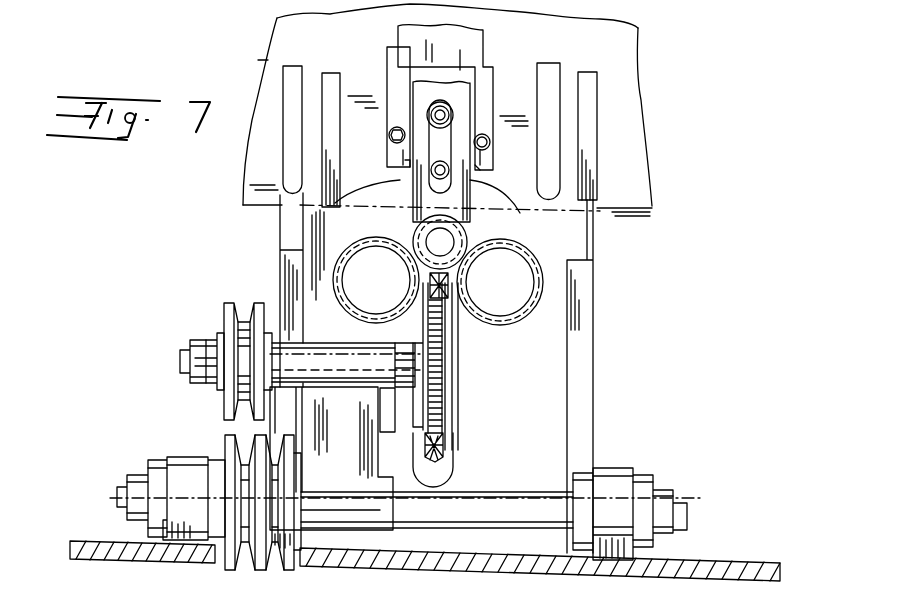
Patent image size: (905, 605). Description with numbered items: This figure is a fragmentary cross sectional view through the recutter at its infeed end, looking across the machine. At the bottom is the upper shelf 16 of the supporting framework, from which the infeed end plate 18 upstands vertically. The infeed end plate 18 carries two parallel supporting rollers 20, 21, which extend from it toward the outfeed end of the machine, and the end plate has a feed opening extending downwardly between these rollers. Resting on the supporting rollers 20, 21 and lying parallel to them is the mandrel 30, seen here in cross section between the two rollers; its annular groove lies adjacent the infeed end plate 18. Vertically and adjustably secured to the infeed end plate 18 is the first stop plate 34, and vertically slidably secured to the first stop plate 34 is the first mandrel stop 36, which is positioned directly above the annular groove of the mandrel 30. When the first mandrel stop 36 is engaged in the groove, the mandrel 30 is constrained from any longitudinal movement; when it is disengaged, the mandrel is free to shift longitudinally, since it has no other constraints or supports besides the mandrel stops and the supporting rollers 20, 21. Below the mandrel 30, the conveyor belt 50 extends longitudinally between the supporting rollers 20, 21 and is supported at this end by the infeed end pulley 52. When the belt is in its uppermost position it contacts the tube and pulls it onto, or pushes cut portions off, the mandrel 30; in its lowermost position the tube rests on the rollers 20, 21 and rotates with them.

The upper shelf 16 is at (754, 564).
The infeed end plate 18 is at (628, 90).
The supporting roller 20 is at (356, 310).
The supporting roller 21 is at (514, 320).
The mandrel 30 is at (464, 238).
The first stop plate 34 is at (485, 80).
The first mandrel stop 36 is at (396, 197).
The conveyor belt 50 is at (440, 470).
The infeed end pulley 52 is at (448, 400).